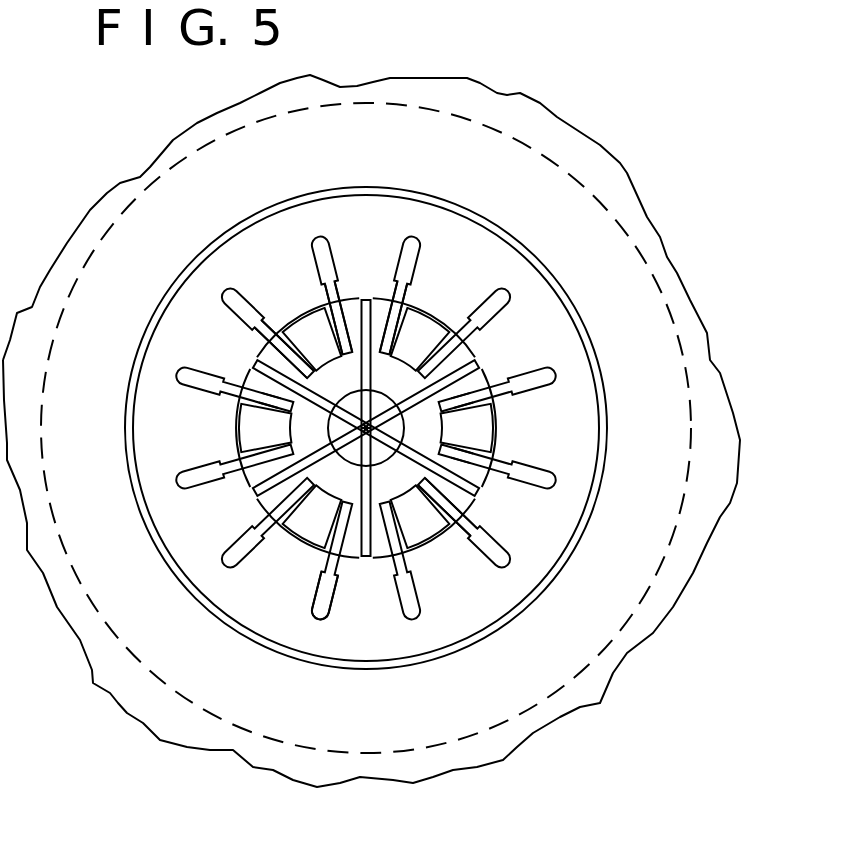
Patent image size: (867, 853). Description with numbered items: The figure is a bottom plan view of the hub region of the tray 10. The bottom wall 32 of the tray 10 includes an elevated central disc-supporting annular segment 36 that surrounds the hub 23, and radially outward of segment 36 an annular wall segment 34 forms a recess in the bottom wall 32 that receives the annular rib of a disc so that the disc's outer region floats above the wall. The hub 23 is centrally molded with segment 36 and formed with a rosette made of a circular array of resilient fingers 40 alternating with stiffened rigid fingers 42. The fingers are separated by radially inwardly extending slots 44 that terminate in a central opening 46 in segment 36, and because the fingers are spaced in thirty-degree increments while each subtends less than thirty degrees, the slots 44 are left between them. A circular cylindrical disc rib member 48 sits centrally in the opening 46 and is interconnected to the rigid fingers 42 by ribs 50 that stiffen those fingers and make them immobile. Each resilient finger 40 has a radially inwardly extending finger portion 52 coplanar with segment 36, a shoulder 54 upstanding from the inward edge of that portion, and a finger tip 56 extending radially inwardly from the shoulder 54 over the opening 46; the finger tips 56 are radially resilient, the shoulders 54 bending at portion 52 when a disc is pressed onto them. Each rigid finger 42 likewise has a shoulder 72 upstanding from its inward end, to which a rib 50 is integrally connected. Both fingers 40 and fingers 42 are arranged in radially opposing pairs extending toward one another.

The tray 10 is at (660, 142).
The hub 23 is at (534, 440).
The bottom wall 32 is at (690, 298).
The annular wall segment 34 is at (633, 512).
The disc supporting annular segment 36 is at (387, 210).
The resilient finger 40 is at (457, 583).
The rigid finger 42 is at (377, 584).
The slot 44 is at (500, 290).
The central opening 46 is at (263, 507).
The disc rib member 48 is at (253, 413).
The rib 50 is at (395, 322).
The finger portion 52 is at (280, 268).
The shoulder 54 is at (253, 443).
The finger tip 56 is at (318, 333).
The shoulder 72 is at (483, 370).